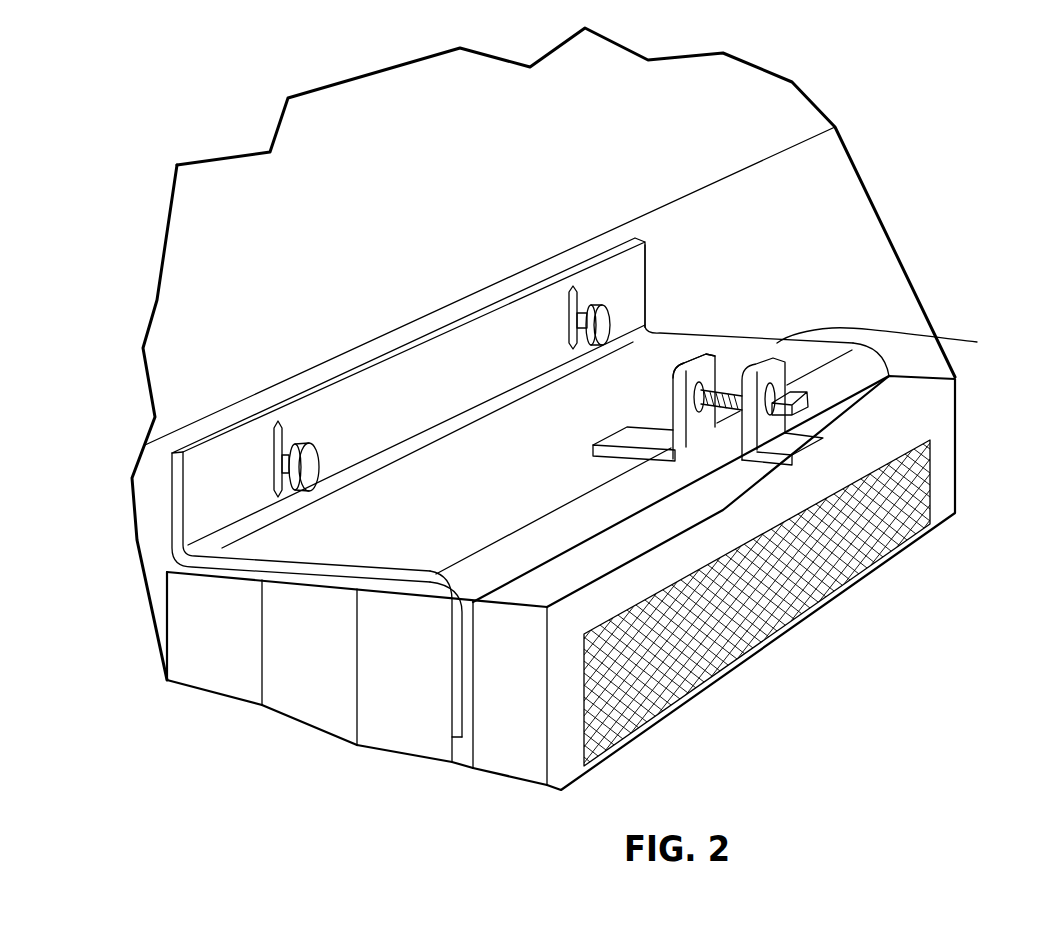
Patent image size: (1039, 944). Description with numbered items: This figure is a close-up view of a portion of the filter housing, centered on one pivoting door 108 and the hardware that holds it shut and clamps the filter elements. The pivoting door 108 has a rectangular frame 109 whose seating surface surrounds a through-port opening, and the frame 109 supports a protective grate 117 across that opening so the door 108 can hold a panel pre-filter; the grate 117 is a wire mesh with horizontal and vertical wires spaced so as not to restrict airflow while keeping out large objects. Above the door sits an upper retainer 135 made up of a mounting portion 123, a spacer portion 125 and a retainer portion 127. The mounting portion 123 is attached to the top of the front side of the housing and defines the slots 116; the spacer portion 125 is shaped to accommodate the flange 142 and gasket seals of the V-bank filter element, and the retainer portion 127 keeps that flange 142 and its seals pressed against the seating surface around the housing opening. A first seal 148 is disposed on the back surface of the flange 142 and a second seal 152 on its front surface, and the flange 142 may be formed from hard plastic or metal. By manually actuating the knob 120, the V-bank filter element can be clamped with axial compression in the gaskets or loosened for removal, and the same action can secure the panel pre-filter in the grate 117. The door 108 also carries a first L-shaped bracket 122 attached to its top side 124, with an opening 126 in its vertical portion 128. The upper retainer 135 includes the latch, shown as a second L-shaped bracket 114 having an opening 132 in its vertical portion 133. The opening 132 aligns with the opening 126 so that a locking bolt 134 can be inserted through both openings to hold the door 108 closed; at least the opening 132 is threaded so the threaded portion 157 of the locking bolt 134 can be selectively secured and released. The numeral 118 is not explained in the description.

The pivoting door 108 is at (937, 412).
The rectangular frame 109 is at (510, 758).
The second L-shaped bracket 114 is at (697, 353).
The slots 116 is at (277, 445).
The protective grate 117 is at (677, 689).
The slot pin 118 is at (270, 472).
The knob 120 is at (320, 452).
The first L-shaped bracket 122 is at (783, 337).
The mounting portion 123 is at (600, 253).
The top side 124 is at (553, 585).
The spacer portion 125 is at (282, 553).
The opening 126 is at (977, 342).
The retainer portion 127 is at (455, 722).
The vertical portion 128 is at (687, 473).
The opening 132 is at (730, 390).
The vertical portion 133 is at (677, 409).
The locking bolt 134 is at (742, 392).
The upper retainer 135 is at (650, 267).
The flange 142 is at (303, 712).
The first seal 148 is at (214, 677).
The second seal 152 is at (398, 742).
The threaded portion 157 is at (768, 325).